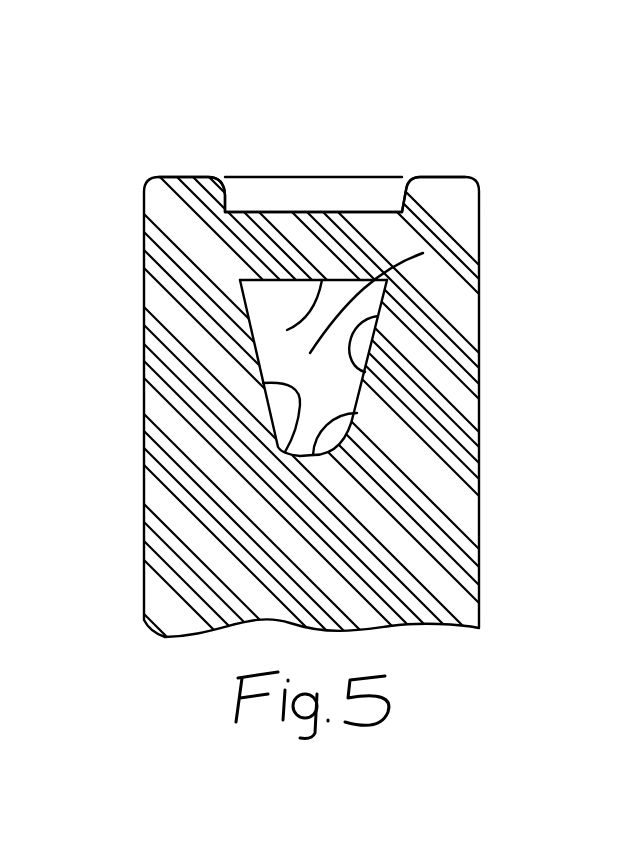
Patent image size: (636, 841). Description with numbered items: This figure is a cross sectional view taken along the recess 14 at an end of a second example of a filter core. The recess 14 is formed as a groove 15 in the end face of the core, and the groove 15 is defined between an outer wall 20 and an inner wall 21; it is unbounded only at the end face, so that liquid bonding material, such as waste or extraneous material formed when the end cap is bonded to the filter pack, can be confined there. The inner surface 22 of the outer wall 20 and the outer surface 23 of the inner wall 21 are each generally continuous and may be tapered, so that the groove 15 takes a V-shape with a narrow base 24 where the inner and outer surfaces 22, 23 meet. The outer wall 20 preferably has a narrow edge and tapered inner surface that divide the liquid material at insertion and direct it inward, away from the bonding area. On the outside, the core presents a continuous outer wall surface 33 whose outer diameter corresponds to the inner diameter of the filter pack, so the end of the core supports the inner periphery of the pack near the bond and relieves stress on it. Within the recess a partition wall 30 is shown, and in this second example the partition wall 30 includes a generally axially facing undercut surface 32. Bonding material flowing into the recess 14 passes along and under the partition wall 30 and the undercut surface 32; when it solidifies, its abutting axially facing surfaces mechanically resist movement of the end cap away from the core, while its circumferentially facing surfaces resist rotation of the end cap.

The recess 14 is at (423, 253).
The groove 15 is at (455, 252).
The outer wall 20 is at (167, 178).
The inner wall 21 is at (452, 195).
The inner surface of the outer wall 22 is at (298, 453).
The outer surface of the inner wall 23 is at (377, 311).
The narrow base 24 is at (357, 413).
The partition wall 30 is at (307, 232).
The axially facing undercut surface 32 is at (322, 280).
The continuous outer wall surface 33 is at (144, 253).